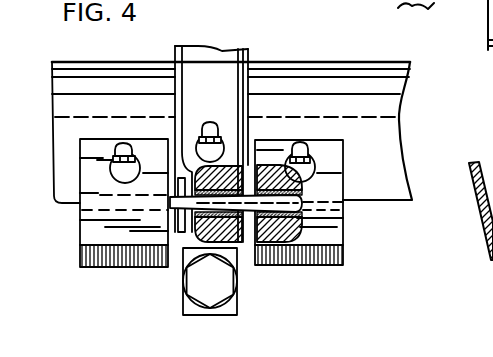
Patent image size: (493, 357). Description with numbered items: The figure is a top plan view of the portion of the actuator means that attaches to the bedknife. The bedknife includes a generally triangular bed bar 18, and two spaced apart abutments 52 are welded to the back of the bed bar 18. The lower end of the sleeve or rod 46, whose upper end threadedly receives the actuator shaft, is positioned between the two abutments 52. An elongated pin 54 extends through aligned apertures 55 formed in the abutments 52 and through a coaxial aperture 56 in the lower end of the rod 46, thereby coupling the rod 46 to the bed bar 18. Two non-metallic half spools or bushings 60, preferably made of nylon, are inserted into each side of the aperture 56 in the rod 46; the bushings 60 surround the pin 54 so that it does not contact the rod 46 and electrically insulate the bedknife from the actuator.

The bed bar 18 is at (260, 88).
The rod 46 is at (233, 112).
The abutments 52 is at (297, 232).
The pin 54 is at (293, 202).
The apertures 55 is at (292, 186).
The aperture 56 is at (230, 193).
The bushings 60 is at (181, 234).